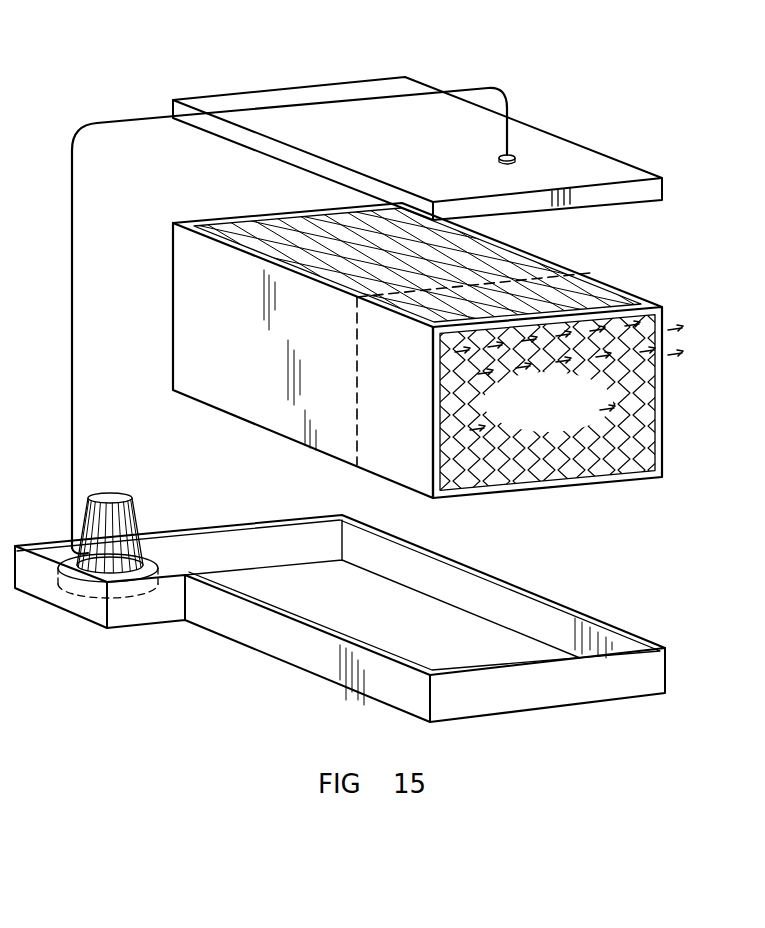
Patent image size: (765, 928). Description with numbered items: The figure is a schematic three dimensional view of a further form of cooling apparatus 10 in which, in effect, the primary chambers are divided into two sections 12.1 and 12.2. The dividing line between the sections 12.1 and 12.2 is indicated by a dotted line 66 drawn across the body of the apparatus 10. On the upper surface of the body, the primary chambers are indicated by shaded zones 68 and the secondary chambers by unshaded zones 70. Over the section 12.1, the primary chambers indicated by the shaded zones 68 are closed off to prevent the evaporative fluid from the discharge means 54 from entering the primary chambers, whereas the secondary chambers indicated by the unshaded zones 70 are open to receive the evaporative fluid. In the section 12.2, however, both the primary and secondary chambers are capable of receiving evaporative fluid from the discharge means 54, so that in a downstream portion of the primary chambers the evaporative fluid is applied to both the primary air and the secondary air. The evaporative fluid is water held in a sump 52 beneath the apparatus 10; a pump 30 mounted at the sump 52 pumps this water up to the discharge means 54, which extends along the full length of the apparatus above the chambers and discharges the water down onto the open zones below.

The cooling apparatus 10 is at (174, 42).
The first section of primary chambers 12.1 is at (190, 340).
The second section of primary chambers 12.2 is at (408, 470).
The pump 30 is at (109, 500).
The sump 52 is at (520, 608).
The discharge means 54 is at (568, 157).
The dotted line 66 is at (357, 410).
The shaded zones 68 is at (313, 237).
The unshaded zones 70 is at (267, 235).